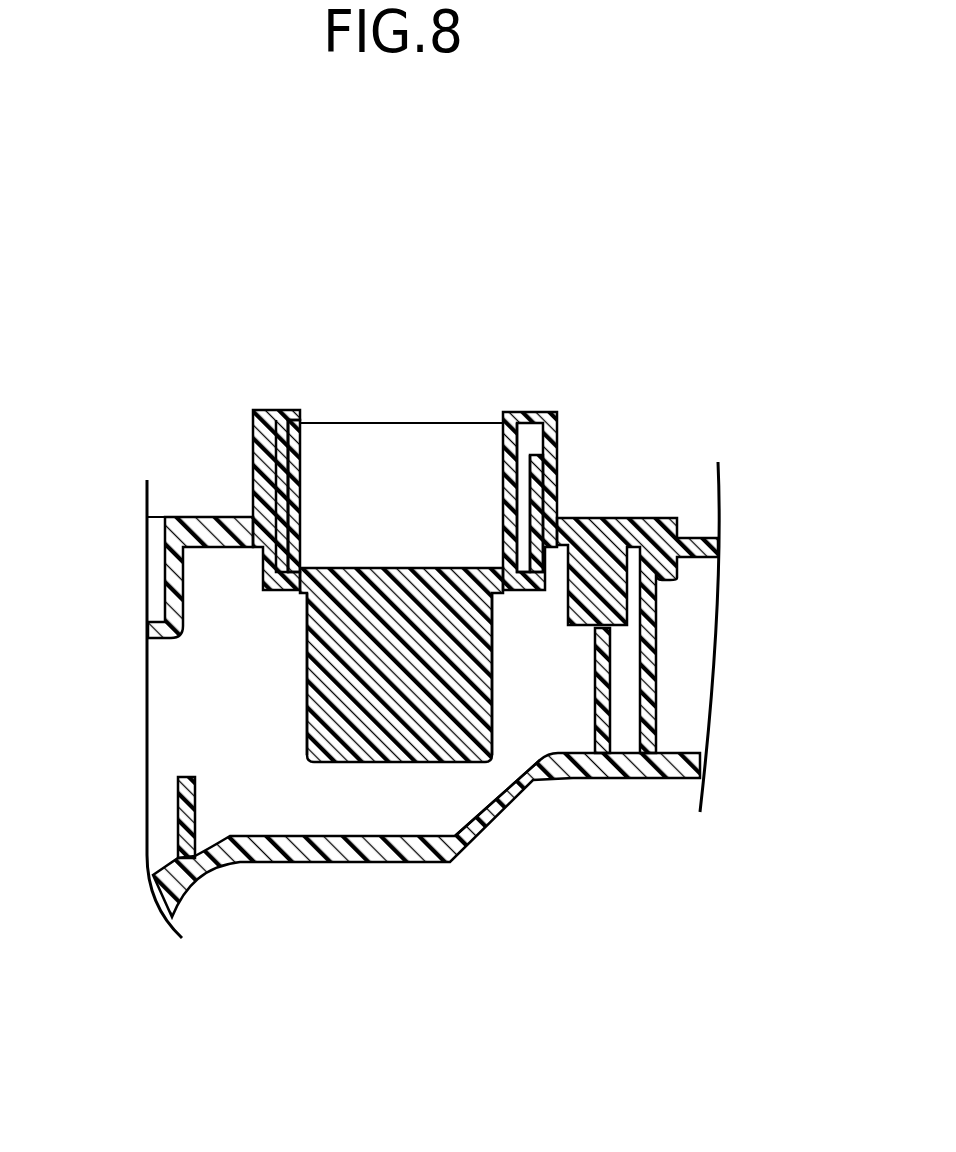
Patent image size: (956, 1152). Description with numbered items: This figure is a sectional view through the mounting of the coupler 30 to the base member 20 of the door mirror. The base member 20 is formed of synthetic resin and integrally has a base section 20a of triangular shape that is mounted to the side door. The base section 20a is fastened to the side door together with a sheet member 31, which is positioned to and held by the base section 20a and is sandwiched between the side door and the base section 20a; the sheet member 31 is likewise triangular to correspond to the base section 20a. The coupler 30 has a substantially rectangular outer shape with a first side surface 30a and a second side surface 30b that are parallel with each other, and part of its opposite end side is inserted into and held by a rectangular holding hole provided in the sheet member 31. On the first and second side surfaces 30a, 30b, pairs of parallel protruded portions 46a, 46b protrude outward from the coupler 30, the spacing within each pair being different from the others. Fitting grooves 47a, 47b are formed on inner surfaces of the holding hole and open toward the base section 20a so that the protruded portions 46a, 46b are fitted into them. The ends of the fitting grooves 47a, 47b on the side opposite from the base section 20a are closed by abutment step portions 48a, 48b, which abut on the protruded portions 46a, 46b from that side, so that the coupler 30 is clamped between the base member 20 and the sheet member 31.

The base member 20 is at (472, 864).
The base section 20a is at (535, 790).
The coupler 30 is at (413, 763).
The first side surface 30a is at (493, 706).
The second side surface 30b is at (307, 708).
The sheet member 31 is at (650, 517).
The protruded portions 46a is at (557, 473).
The protruded portions 46b is at (255, 487).
The fitting groove 47a is at (533, 437).
The fitting groove 47b is at (290, 473).
The abutment step portion 48a is at (518, 457).
The abutment step portion 48b is at (296, 447).